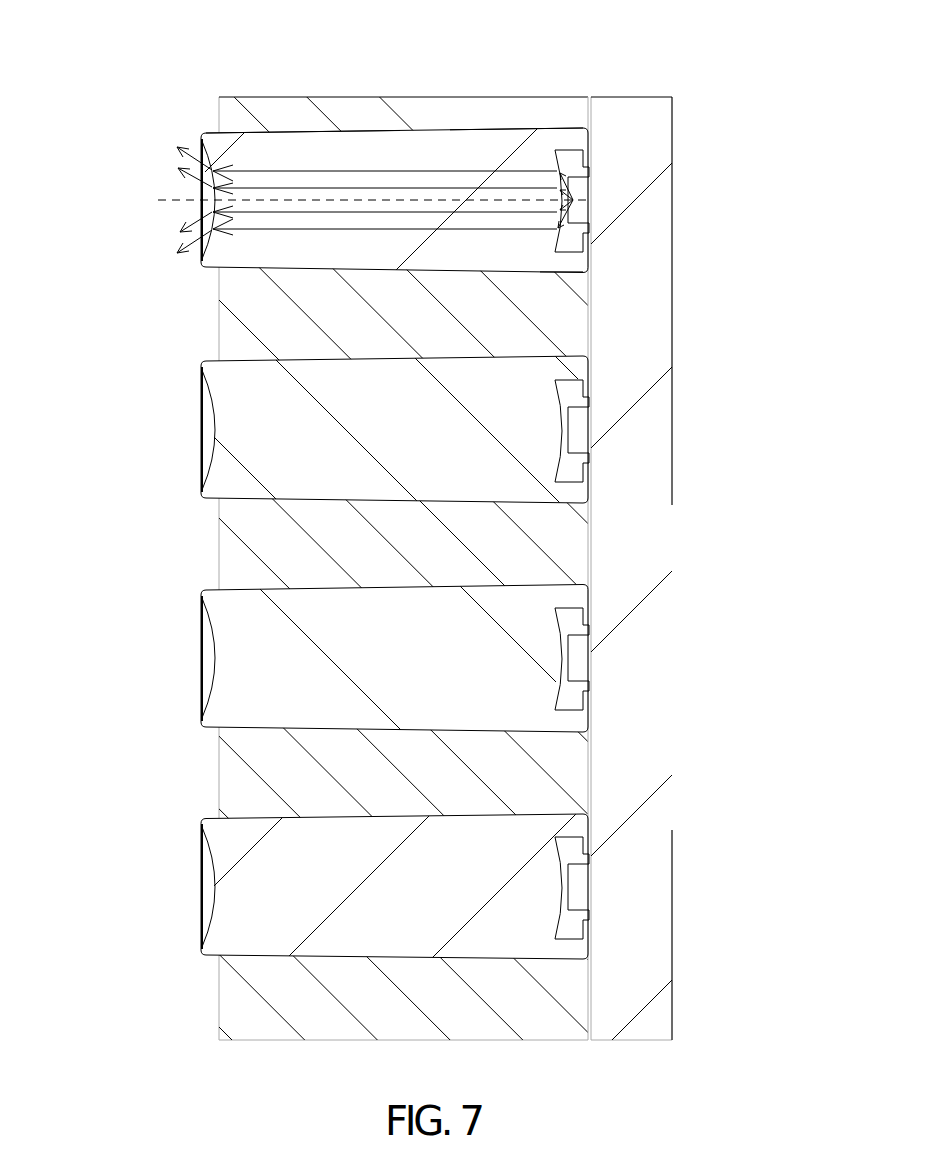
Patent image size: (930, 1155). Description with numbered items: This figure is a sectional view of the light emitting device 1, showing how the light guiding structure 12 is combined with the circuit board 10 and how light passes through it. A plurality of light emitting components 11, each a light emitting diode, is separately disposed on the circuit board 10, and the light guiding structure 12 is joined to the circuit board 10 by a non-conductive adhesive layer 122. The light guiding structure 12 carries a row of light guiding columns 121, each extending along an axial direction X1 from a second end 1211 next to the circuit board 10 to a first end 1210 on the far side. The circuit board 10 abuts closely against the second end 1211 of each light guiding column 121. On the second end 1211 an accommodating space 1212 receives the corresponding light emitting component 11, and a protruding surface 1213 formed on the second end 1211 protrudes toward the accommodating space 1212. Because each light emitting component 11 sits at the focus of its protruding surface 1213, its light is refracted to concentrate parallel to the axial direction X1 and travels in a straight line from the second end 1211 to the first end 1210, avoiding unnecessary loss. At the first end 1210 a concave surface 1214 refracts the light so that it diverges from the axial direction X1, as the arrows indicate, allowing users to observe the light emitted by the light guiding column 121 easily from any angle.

The light emitting device 1 is at (698, 80).
The circuit board 10 is at (627, 283).
The light emitting component 11 is at (583, 213).
The light guiding structure 12 is at (140, 68).
The light guiding column 121 is at (163, 158).
The first end 1210 is at (207, 133).
The second end 1211 is at (590, 137).
The accommodating space 1212 is at (580, 157).
The protruding surface 1213 is at (580, 253).
The concave surface 1214 is at (197, 203).
The non-conductive adhesive layer 122 is at (590, 998).
The axial direction X1 is at (359, 202).